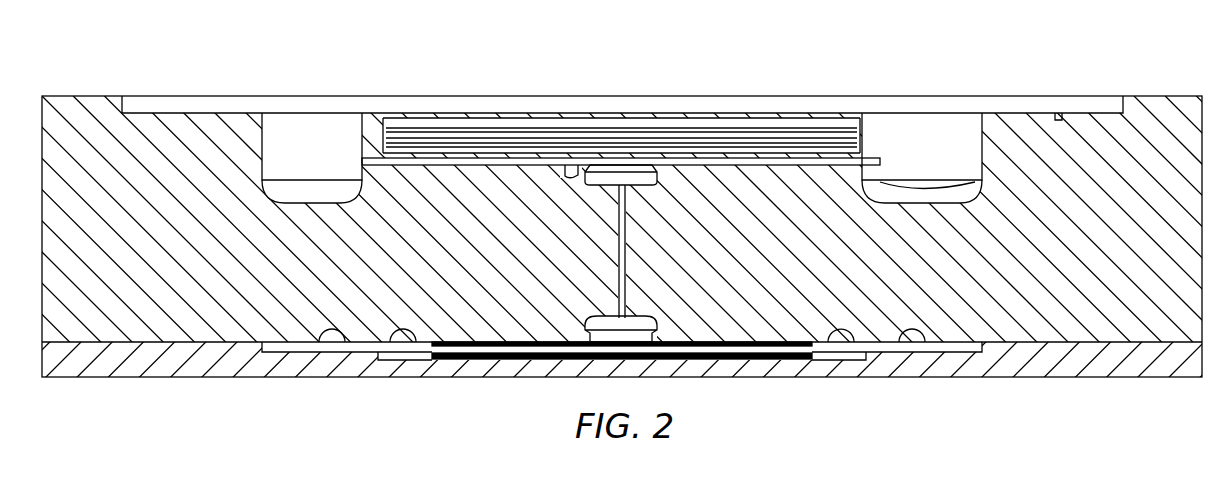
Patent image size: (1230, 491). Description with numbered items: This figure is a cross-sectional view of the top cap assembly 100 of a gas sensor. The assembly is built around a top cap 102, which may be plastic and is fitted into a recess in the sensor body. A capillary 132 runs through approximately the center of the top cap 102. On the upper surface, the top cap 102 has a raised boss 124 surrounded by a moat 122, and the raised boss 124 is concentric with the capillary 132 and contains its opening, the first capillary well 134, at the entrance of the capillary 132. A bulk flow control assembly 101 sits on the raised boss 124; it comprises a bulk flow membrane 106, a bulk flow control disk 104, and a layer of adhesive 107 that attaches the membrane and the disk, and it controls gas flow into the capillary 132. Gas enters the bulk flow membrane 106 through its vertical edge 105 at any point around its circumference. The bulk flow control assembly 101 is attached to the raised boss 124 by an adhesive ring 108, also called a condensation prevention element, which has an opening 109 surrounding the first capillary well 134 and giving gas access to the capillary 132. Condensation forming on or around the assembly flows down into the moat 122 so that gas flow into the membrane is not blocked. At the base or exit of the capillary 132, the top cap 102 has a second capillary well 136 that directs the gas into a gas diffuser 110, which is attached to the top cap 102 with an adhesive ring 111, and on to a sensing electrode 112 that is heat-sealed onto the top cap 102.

The top cap assembly 100 is at (821, 40).
The bulk flow control assembly 101 is at (676, 101).
The top cap 102 is at (1151, 92).
The bulk flow control disk 104 is at (440, 140).
The vertical edge 105 is at (383, 138).
The bulk flow membrane 106 is at (424, 118).
The layer of adhesive 107 is at (589, 130).
The adhesive ring 108 is at (448, 166).
The opening 109 is at (566, 173).
The gas diffuser 110 is at (538, 362).
The adhesive ring 111 is at (745, 362).
The sensing electrode 112 is at (437, 362).
The moat 122 is at (309, 204).
The raised boss 124 is at (810, 184).
The capillary 132 is at (627, 250).
The first capillary well 134 is at (659, 178).
The second capillary well 136 is at (657, 318).